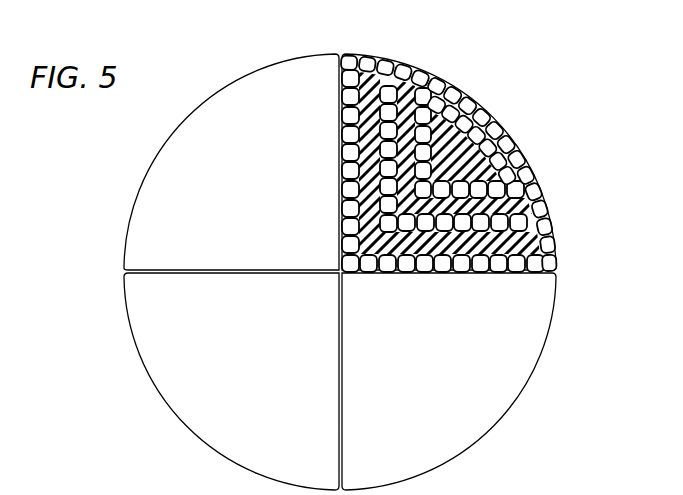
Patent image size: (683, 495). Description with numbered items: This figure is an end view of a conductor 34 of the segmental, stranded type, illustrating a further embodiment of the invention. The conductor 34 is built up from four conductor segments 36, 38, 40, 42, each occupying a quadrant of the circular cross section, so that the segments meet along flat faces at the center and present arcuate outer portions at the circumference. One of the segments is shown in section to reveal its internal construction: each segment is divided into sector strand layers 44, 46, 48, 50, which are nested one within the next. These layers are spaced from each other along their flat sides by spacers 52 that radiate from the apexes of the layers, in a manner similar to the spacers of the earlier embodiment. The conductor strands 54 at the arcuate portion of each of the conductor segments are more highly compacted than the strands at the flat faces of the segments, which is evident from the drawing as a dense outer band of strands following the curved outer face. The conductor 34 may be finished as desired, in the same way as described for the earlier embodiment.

The conductor 34 is at (347, 47).
The conductor segment 36 is at (143, 183).
The conductor segment 38 is at (498, 116).
The conductor segment 40 is at (538, 360).
The conductor segment 42 is at (134, 340).
The sector strand layer 44 is at (340, 88).
The sector strand layer 46 is at (341, 147).
The sector strand layer 48 is at (381, 162).
The sector strand layer 50 is at (455, 165).
The spacer 52 is at (345, 213).
The conductor strand 54 is at (477, 85).